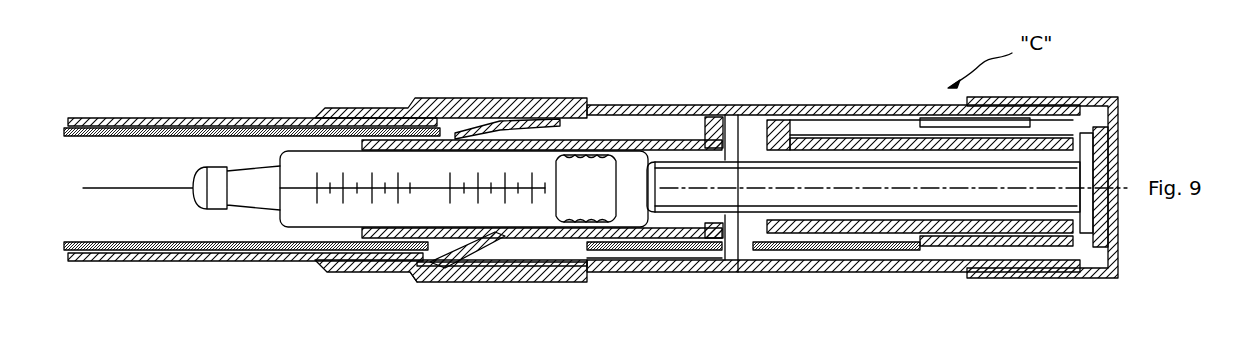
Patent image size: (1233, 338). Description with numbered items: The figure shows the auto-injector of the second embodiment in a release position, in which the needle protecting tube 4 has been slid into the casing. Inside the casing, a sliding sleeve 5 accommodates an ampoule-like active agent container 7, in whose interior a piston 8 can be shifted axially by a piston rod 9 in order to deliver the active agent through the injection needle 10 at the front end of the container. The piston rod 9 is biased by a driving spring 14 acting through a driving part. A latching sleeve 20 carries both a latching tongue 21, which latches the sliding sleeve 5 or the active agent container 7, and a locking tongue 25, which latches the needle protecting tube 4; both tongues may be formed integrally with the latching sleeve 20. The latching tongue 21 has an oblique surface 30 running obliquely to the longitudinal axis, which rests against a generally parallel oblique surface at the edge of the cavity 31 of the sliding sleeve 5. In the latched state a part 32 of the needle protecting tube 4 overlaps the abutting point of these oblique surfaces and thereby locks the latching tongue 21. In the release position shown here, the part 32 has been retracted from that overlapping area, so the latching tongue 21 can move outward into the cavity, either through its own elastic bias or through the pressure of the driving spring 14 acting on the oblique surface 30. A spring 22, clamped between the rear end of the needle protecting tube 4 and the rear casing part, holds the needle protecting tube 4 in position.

The injection needle 10 is at (110, 183).
The needle protecting tube 4 is at (203, 130).
The active agent container 7 is at (292, 165).
The latching sleeve 20 is at (355, 117).
The locking tongue 25 is at (495, 100).
The piston 8 is at (580, 172).
The sliding sleeve 5 is at (663, 135).
The driving spring 14 is at (820, 167).
The piston rod 9 is at (818, 200).
The spring 22 is at (1010, 253).
The cavity 31 is at (418, 270).
The latching tongue 21 is at (475, 277).
The oblique surface 30 is at (520, 268).
The part of the needle protecting tube 32 is at (605, 262).